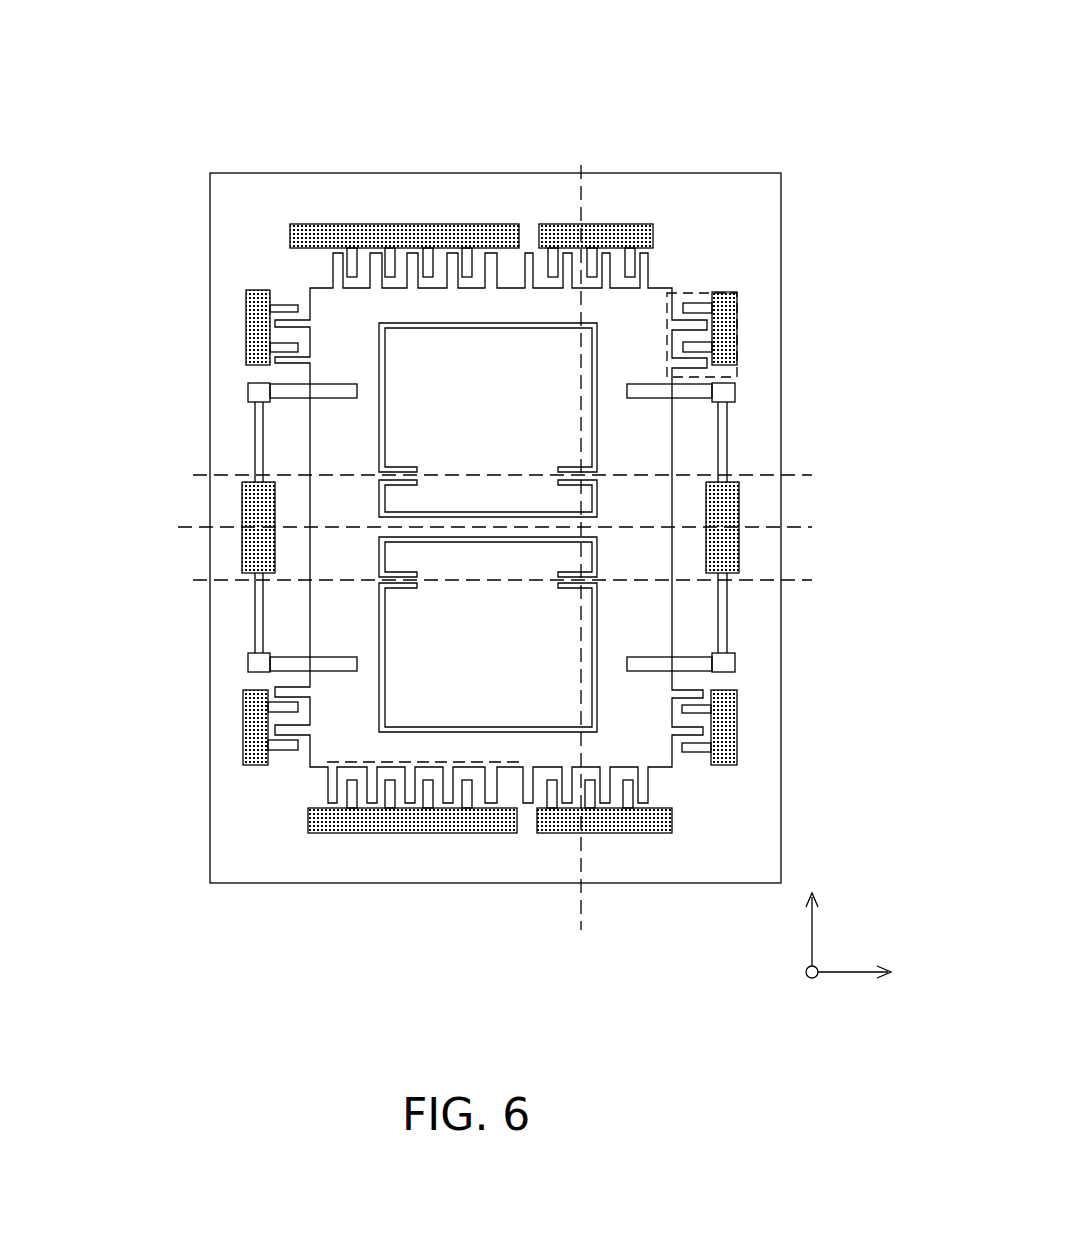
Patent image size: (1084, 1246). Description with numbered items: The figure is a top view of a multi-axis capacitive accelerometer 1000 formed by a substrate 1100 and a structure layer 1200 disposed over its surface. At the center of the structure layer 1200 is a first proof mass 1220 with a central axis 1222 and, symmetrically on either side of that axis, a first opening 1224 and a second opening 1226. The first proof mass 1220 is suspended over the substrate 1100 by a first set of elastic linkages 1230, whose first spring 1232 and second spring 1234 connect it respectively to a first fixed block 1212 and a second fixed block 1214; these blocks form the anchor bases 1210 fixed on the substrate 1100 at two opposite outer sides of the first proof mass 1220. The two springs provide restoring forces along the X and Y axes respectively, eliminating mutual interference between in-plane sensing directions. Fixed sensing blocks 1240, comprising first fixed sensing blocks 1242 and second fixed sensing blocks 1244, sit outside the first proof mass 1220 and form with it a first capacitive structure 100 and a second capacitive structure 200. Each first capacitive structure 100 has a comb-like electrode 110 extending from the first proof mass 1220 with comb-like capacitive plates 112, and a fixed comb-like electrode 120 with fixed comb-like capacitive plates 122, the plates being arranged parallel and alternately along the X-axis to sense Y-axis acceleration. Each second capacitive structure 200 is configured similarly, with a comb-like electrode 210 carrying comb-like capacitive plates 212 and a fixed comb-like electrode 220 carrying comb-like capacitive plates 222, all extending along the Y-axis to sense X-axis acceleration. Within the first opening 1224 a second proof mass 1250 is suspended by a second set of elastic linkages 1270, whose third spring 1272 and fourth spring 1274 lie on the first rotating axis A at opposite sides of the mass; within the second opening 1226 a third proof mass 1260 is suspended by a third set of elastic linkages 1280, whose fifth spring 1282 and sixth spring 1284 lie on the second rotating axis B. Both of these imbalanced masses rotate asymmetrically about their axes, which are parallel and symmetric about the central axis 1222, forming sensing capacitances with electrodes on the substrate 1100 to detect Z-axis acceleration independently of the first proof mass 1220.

The multi-axis capacitive accelerometer 1000 is at (858, 98).
The substrate 1100 is at (212, 198).
The structure layer 1200 is at (228, 138).
The first proof mass 1220 is at (365, 372).
The first opening 1224 is at (590, 370).
The second opening 1226 is at (392, 612).
The second proof mass 1250 is at (403, 337).
The second set of elastic linkages 1270 is at (122, 427).
The third spring 1272 is at (398, 480).
The fourth spring 1274 is at (567, 470).
The central axis 1222 is at (469, 528).
The fixed sensing blocks 1240 is at (372, 528).
The first fixed sensing block 1242 is at (250, 336).
The second fixed sensing block 1244 is at (290, 232).
The anchor bases 1210 is at (588, 518).
The first fixed block 1212 is at (263, 515).
The second fixed block 1214 is at (738, 500).
The first set of elastic linkages 1230 is at (600, 533).
The first spring 1232 is at (263, 600).
The second spring 1234 is at (723, 635).
The third proof mass 1260 is at (410, 730).
The third set of elastic linkages 1280 is at (488, 796).
The fifth spring 1282 is at (405, 637).
The sixth spring 1284 is at (563, 638).
The fixed comb-like electrode 220 is at (601, 144).
The comb-like capacitive plates 222 is at (525, 257).
The comb-like electrode 210 is at (731, 240).
The comb-like capacitive plates 212 is at (652, 253).
The first capacitive structure 100 is at (740, 312).
The fixed comb-like electrode 120 is at (799, 725).
The fixed comb-like capacitive plates 122 is at (737, 710).
The comb-like electrode 110 is at (708, 841).
The comb-like capacitive plates 112 is at (680, 693).
The second capacitive structure 200 is at (356, 835).